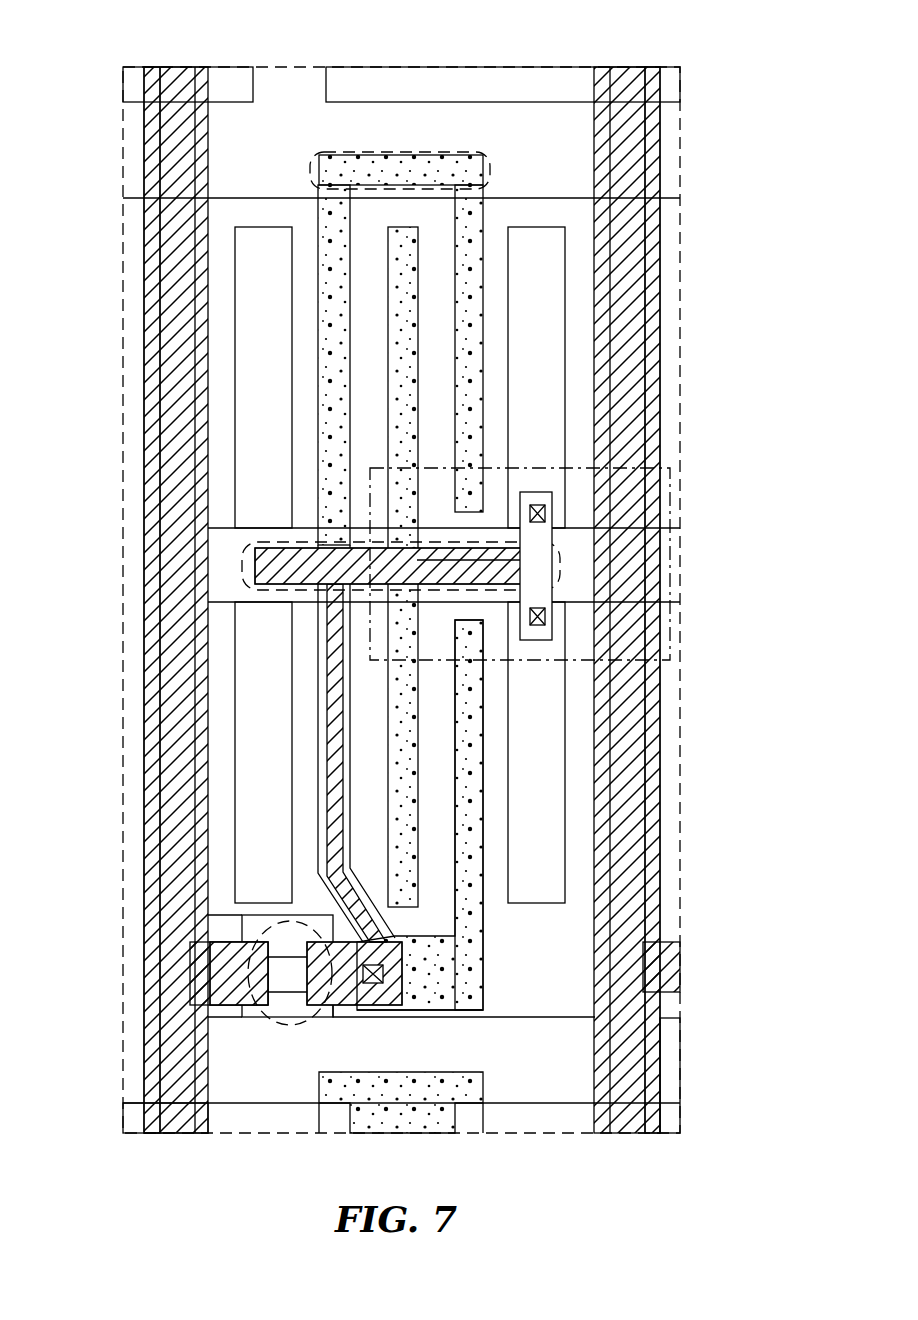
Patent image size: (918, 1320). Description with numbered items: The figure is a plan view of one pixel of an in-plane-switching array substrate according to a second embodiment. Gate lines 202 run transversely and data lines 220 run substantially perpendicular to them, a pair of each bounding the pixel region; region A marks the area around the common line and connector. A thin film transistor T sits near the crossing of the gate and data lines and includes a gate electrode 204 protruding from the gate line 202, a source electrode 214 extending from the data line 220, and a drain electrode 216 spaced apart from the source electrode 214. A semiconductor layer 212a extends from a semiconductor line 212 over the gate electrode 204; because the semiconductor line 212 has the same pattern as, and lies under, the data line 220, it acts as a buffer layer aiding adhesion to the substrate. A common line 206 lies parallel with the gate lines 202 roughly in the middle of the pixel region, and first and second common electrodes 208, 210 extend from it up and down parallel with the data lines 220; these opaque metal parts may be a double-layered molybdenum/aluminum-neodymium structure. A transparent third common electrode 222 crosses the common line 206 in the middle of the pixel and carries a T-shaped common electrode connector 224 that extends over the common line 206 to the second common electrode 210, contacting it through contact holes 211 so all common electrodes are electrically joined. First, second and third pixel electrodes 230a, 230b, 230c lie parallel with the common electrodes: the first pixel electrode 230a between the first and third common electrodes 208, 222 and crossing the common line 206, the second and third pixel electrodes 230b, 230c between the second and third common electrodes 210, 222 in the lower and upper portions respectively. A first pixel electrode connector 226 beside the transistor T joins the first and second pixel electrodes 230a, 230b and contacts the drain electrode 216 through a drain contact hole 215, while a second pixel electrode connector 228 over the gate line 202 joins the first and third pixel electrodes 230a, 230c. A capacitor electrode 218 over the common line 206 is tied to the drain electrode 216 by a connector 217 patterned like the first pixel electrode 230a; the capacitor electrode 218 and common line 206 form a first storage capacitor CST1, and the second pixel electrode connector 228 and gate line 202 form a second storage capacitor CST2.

The gate line 202 is at (401, 604).
The gate electrode 204 is at (345, 964).
The common line 206 is at (491, 565).
The first common electrode 208 is at (163, 565).
The second common electrode 210 is at (639, 565).
The contact hole 211 is at (636, 566).
The semiconductor line 212 is at (339, 600).
The semiconductor layer 212a is at (284, 1015).
The source electrode 214 is at (239, 1019).
The drain contact hole 215 is at (455, 815).
The drain electrode 216 is at (354, 998).
The connector 217 is at (545, 763).
The capacitor electrode 218 is at (481, 634).
The data line 220 is at (332, 600).
The third common electrode 222 is at (576, 567).
The common electrode connector 224 is at (504, 559).
The first pixel electrode connector 226 is at (464, 978).
The second pixel electrode connector 228 is at (401, 102).
The first pixel electrode 230a is at (405, 563).
The second pixel electrode 230b is at (520, 815).
The third pixel electrode 230c is at (610, 348).
The region A is at (560, 553).
The thin film transistor T is at (290, 927).
The first storage capacitor CST1 is at (510, 612).
The second storage capacitor CST2 is at (400, 94).